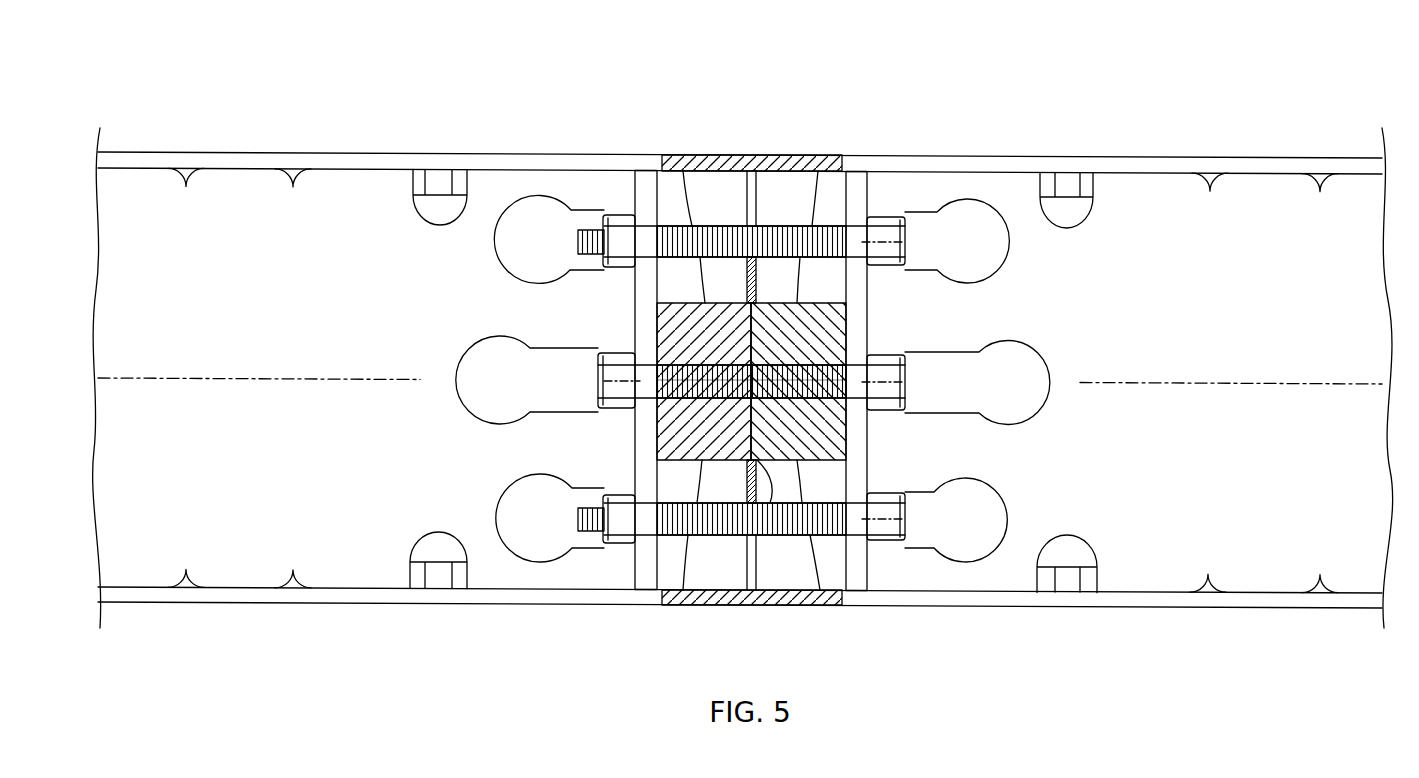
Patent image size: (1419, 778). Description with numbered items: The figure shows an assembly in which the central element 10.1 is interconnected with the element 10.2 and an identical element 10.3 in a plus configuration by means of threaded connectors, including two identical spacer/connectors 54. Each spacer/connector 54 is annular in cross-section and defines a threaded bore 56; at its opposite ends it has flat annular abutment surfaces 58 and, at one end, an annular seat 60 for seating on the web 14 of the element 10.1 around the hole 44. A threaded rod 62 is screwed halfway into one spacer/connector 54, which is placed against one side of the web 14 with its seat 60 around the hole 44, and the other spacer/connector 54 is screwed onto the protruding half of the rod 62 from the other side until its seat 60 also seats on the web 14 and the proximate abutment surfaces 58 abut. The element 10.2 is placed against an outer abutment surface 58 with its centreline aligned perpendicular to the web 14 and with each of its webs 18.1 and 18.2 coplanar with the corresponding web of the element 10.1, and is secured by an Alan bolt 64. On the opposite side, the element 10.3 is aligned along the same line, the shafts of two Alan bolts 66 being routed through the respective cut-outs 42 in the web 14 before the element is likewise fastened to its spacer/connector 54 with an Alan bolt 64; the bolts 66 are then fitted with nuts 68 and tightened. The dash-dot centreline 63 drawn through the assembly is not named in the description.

The element 10.1 is at (714, 147).
The element 10.2 is at (322, 145).
The element 10.3 is at (1174, 148).
The web 14 is at (746, 300).
The web 18.1 is at (484, 164).
The web 18.2 is at (486, 596).
The cut-out 42 is at (762, 187).
The hole 44 is at (772, 431).
The spacer/connector 54 is at (660, 445).
The threaded bore 56 is at (710, 368).
The abutment surface 58 is at (745, 332).
The annular seat 60 is at (774, 537).
The threaded rod 62 is at (737, 398).
The center axis 63 is at (243, 370).
The Alan bolt 64 is at (597, 383).
The Alan bolt 66 is at (906, 245).
The nut 68 is at (628, 213).